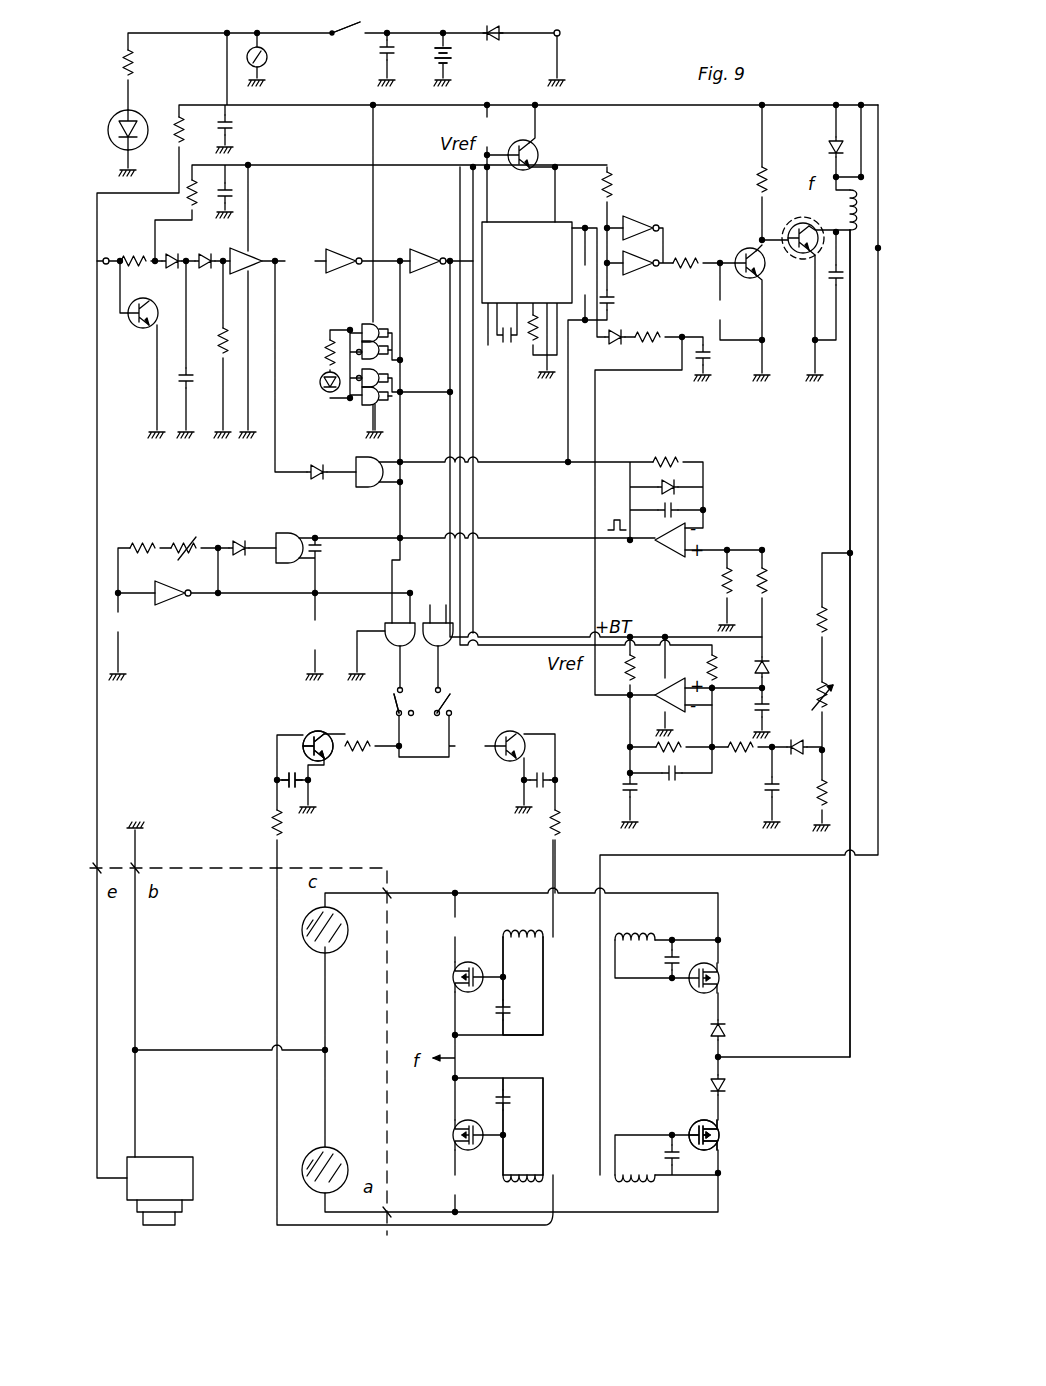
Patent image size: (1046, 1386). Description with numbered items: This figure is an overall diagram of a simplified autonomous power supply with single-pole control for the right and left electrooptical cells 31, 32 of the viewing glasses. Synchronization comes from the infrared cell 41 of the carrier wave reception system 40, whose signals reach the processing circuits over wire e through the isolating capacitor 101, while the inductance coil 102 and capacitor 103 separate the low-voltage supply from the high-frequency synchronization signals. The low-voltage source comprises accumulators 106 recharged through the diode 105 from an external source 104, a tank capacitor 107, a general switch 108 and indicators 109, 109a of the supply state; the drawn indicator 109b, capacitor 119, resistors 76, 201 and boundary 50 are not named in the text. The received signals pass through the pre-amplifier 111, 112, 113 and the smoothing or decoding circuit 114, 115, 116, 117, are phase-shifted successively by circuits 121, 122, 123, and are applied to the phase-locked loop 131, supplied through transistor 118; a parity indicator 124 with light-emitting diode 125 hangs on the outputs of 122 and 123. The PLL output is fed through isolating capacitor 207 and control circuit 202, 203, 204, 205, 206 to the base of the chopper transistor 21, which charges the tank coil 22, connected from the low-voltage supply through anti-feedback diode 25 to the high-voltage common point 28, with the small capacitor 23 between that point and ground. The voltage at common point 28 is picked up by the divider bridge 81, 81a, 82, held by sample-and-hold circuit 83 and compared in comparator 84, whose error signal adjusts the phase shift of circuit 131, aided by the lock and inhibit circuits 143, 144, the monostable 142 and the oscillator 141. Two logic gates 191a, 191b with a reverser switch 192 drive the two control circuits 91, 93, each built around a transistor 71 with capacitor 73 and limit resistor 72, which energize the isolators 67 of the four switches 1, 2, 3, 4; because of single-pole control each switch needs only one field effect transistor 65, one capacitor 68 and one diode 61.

The floating control switch 1 is at (678, 1118).
The floating control switch 2 is at (543, 1126).
The floating control switch 3 is at (675, 998).
The floating control switch 4 is at (552, 1036).
The switching component transistor 21 is at (786, 234).
The inductance coil 22 is at (846, 222).
The capacitor 23 is at (844, 282).
The anti-feedback diode 25 is at (819, 138).
The high-voltage production common point 28 is at (876, 248).
The right electrooptical cell 31 is at (340, 1152).
The left electrooptical cell 32 is at (338, 947).
The carrier wave reception system 40 is at (171, 1156).
The infrared cell 41 is at (180, 1219).
The housing boundary 50 is at (368, 866).
The diode 61 is at (730, 1084).
The field effect transistor 65 is at (722, 1132).
The isolator 67 is at (643, 1185).
The capacitor 68 is at (664, 1154).
The transistor 71 is at (322, 726).
The limit resistor 72 is at (274, 828).
The capacitor 73 is at (276, 766).
The resistor 76 is at (372, 738).
The divider bridge resistor 81 is at (816, 628).
The divider bridge element 81a is at (818, 700).
The divider bridge resistor 82 is at (814, 782).
The sample-and-hold circuit 83 is at (754, 774).
The comparator 84 is at (624, 718).
The control circuit 91 is at (330, 766).
The control circuit 93 is at (496, 773).
The isolating capacitor 101 is at (119, 242).
The inductance coil 102 is at (176, 150).
The capacitor 103 is at (241, 128).
The external source 104 is at (564, 37).
The diode 105 is at (499, 48).
The accumulators 106 is at (455, 62).
The tank capacitor 107 is at (368, 64).
The general switch 108 is at (344, 30).
The indicator 109 is at (264, 59).
The indicator 109a is at (133, 78).
The light emitting diode 109b is at (144, 120).
The pre-amplifier 111 is at (149, 330).
The pre-amplifier 112 is at (132, 263).
The pre-amplifier 113 is at (188, 206).
The smoothing or decoding circuit 114 is at (178, 248).
The smoothing or decoding circuit 115 is at (176, 386).
The smoothing or decoding circuit 116 is at (204, 270).
The smoothing or decoding circuit 117 is at (210, 344).
The transistor 118 is at (540, 146).
The capacitor 119 is at (241, 196).
The phase-shift circuit 121 is at (259, 249).
The phase-shift circuit 122 is at (345, 249).
The phase-shift circuit 123 is at (429, 249).
The parity indicator 124 is at (406, 372).
The light-emitting diode 125 is at (319, 381).
The phase-locked loop circuit 131 is at (507, 217).
The oscillator 141 is at (164, 639).
The monostable circuit 142 is at (266, 538).
The lock and inhibit circuit 143 is at (664, 562).
The lock and inhibit circuit 144 is at (357, 462).
The logic gate 191a is at (385, 631).
The logic gate 191b is at (445, 650).
The reverser switch 192 is at (394, 704).
The resistor 201 is at (612, 176).
The control circuit 202 is at (641, 216).
The control circuit 203 is at (692, 256).
The control circuit 204 is at (755, 186).
The control circuit 205 is at (768, 277).
The control circuit 206 is at (718, 326).
The isolating capacitor 207 is at (616, 304).